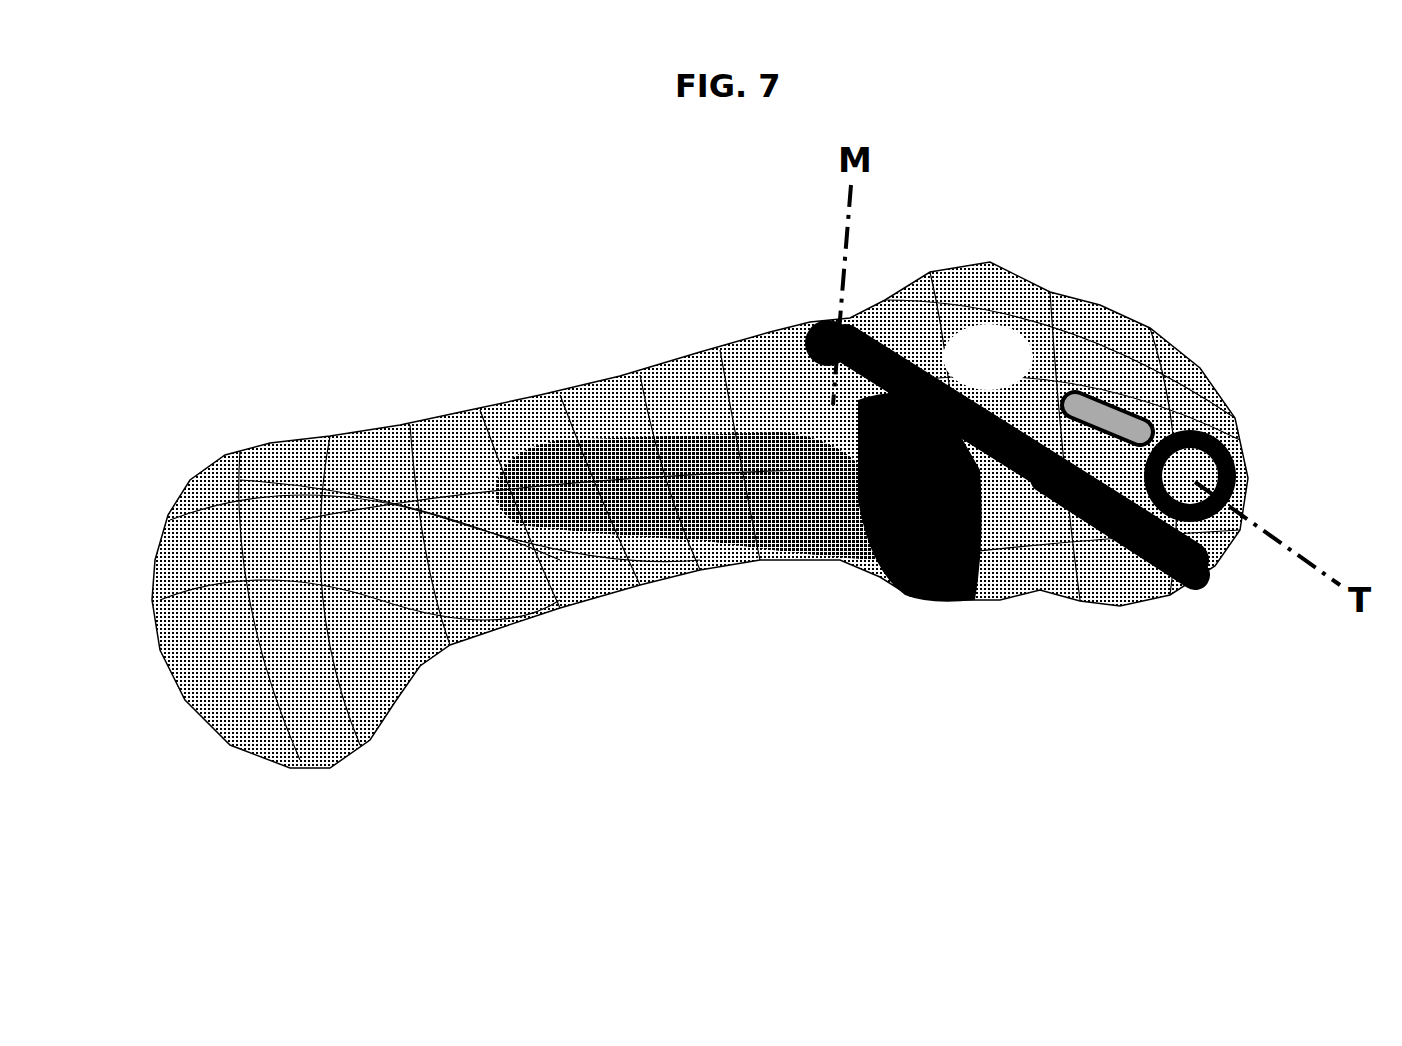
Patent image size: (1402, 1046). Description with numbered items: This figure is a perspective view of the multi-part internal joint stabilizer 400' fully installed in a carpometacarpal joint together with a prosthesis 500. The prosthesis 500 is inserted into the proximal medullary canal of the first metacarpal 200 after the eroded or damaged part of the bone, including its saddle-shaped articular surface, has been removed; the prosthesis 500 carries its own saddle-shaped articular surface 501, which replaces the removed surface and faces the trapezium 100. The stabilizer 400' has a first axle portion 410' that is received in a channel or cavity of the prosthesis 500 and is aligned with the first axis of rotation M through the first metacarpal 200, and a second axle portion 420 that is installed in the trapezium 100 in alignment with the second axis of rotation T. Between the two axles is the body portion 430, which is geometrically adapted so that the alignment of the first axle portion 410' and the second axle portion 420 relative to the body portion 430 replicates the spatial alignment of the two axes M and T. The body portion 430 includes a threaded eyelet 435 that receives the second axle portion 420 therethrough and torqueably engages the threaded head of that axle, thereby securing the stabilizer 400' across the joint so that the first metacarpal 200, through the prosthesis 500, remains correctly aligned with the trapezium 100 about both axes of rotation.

The first metacarpal 200 is at (415, 478).
The trapezium 100 is at (1155, 352).
The first axle portion 410' is at (724, 330).
The multi-part internal joint stabilizer 400' is at (1020, 570).
The second axle portion 420 is at (1120, 426).
The threaded eyelet 435 is at (1227, 437).
The body portion 430 is at (890, 570).
The prosthesis 500 is at (698, 548).
The saddle-shaped articular surface 501 is at (990, 565).